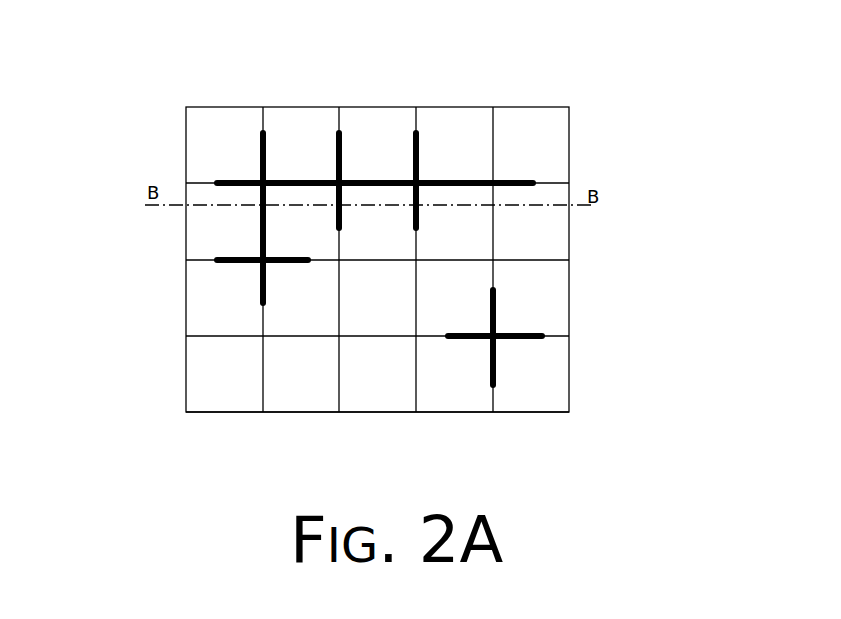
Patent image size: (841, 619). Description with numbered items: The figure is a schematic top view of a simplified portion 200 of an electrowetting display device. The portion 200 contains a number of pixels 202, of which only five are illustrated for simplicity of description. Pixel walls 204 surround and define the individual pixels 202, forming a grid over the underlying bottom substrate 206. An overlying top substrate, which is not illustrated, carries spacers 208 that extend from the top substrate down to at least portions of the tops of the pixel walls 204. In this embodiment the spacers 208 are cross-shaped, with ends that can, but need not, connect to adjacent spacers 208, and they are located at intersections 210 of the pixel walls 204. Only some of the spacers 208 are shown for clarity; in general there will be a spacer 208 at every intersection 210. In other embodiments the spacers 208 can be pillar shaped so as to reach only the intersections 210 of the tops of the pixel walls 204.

The portion 200 is at (597, 54).
The pixel 202 is at (245, 157).
The pixel wall 204 is at (376, 262).
The bottom substrate 206 is at (513, 412).
The spacer 208 is at (337, 155).
The intersection 210 is at (260, 265).